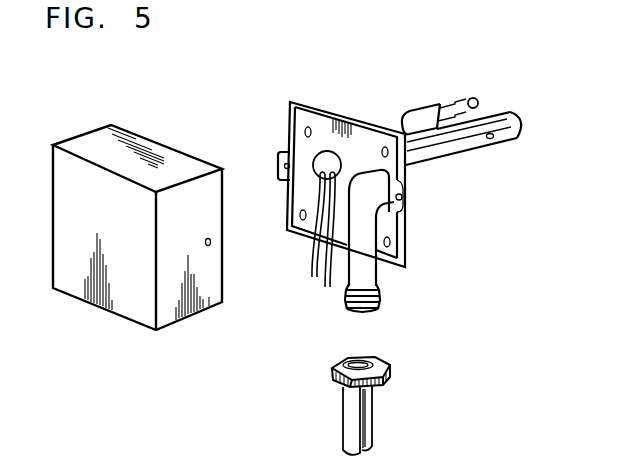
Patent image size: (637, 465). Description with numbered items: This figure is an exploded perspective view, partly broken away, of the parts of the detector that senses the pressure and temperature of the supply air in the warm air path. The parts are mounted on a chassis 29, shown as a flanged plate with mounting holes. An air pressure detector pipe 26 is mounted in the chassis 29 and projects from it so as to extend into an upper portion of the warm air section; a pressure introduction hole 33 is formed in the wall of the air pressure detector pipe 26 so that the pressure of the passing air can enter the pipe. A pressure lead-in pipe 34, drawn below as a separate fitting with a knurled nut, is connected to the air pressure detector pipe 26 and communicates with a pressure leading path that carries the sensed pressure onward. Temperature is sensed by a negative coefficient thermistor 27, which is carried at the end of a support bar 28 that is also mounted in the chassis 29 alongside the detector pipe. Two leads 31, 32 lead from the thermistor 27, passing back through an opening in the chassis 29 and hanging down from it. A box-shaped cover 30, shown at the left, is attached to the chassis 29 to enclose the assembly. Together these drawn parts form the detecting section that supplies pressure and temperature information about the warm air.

The air pressure detector pipe 26 is at (458, 158).
The negative coefficient thermistor 27 is at (477, 98).
The support bar 28 is at (415, 111).
The chassis 29 is at (304, 125).
The cover 30 is at (82, 135).
The lead 31 is at (312, 278).
The lead 32 is at (327, 289).
The pressure introduction hole 33 is at (494, 139).
The pressure lead-in pipe 34 is at (372, 410).